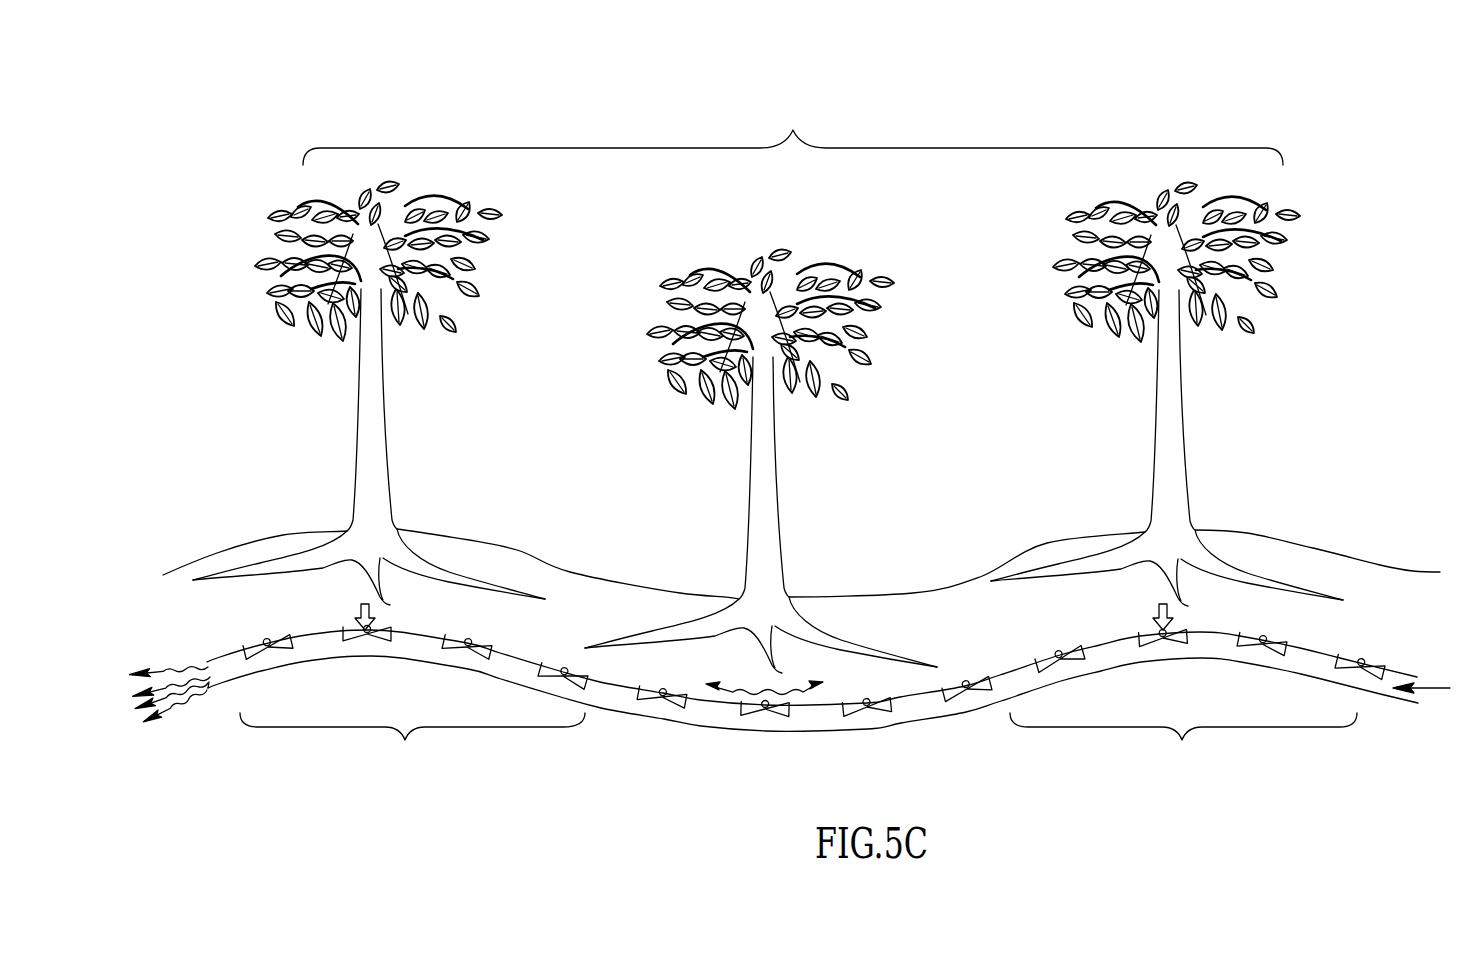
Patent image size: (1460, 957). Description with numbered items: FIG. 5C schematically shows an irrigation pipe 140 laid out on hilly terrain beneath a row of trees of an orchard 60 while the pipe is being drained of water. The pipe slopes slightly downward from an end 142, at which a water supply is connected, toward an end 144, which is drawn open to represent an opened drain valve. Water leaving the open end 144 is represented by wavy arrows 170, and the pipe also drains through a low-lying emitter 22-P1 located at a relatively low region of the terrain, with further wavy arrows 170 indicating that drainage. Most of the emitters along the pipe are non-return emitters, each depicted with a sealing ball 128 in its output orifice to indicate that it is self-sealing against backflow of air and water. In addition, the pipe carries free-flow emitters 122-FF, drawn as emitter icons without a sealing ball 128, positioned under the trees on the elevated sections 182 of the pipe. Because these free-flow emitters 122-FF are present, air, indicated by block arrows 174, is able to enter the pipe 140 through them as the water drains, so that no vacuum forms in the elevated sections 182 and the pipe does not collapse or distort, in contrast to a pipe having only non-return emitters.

The orchard 60 is at (793, 128).
The sealing ball 128 is at (470, 640).
The block arrows 174 is at (373, 615).
The wavy arrows 170 is at (178, 668).
The free-flow emitter 122-FF is at (350, 636).
The end of the pipe 144 is at (207, 690).
The sections of the pipe 182 is at (798, 748).
The irrigation pipe 140 is at (680, 733).
The end of the pipe 142 is at (1432, 688).
The emitter 22-P1 is at (766, 716).